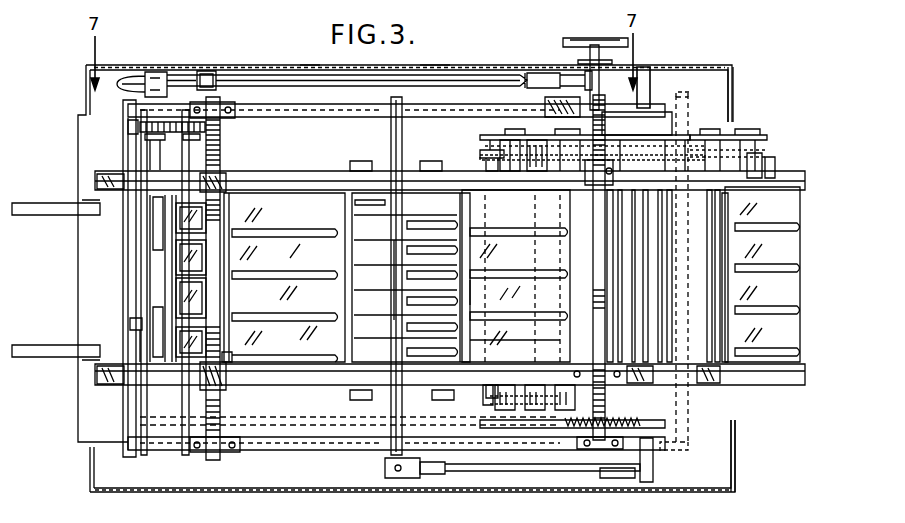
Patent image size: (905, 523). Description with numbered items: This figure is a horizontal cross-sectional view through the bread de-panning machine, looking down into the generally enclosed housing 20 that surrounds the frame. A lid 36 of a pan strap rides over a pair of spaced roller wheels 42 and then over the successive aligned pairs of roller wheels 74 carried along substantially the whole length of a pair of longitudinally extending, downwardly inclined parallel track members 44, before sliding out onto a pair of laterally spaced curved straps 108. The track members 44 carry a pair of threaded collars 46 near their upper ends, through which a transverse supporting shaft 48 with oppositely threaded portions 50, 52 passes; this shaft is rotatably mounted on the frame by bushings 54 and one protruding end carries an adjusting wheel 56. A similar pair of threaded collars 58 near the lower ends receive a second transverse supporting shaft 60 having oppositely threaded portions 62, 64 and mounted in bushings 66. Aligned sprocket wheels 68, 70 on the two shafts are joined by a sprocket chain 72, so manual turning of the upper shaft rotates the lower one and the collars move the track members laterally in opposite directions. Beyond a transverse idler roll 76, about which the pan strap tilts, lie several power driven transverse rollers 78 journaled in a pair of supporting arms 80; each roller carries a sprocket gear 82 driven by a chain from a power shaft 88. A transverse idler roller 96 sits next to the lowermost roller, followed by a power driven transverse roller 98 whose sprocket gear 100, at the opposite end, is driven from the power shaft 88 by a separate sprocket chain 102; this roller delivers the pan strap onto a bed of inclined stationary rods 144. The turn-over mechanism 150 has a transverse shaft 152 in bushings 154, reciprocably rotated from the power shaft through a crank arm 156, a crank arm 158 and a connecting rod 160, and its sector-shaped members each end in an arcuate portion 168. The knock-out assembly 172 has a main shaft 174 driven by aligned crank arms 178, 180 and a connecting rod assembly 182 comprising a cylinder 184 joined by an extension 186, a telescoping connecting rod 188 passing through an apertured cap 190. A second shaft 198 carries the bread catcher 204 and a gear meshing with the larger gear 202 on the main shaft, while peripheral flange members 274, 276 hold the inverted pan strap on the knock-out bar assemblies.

The housing 20 is at (281, 65).
The lid 36 is at (312, 258).
The roller wheels 42 is at (730, 340).
The track members 44 is at (322, 171).
The threaded collars 46 is at (486, 171).
The transverse supporting shaft 48 is at (608, 123).
The threaded portion 50 is at (560, 215).
The threaded portion 52 is at (545, 330).
The bushings 54 is at (632, 94).
The adjusting wheel 56 is at (597, 38).
The threaded collars 58 is at (228, 168).
The transverse supporting shaft 60 is at (222, 134).
The threaded portion 62 is at (225, 208).
The threaded portion 64 is at (228, 342).
The bushings 66 is at (228, 102).
The sprocket wheel 68 is at (620, 426).
The sprocket wheel 70 is at (184, 422).
The sprocket chain 72 is at (352, 418).
The roller wheels 74 is at (335, 171).
The transverse idler roll 76 is at (762, 168).
The transverse rollers 78 is at (668, 208).
The supporting arms 80 is at (716, 130).
The sprocket gear 82 is at (740, 134).
The power shaft 88 is at (548, 112).
The transverse idler roller 96 is at (540, 412).
The power driven transverse roller 98 is at (522, 150).
The sprocket gear 100 is at (518, 410).
The sprocket chain 102 is at (570, 445).
The curved straps 108 is at (32, 358).
The stationary rods 144 is at (430, 324).
The turn-over mechanism 150 is at (413, 268).
The transverse horizontal shaft 152 is at (390, 124).
The bushings 154 is at (412, 105).
The crank arm 156 is at (598, 468).
The crank arm 158 is at (425, 478).
The connecting rod 160 is at (458, 476).
The arcuate portion 168 is at (412, 214).
The de-panning or knock-out assembly 172 is at (165, 263).
The transverse horizontal shaft 174 is at (158, 408).
The crank arm 178 is at (135, 75).
The crank arm 180 is at (592, 60).
The connecting rod assembly 182 is at (428, 74).
The cylinder 184 is at (298, 74).
The extension 186 is at (530, 74).
The connecting rod 188 is at (185, 77).
The apertured cap 190 is at (210, 71).
The second horizontal transverse rotatable shaft 198 is at (198, 142).
The gear 202 is at (130, 125).
The bread catcher 204 is at (185, 290).
The peripheral flange member 274 is at (160, 220).
The peripheral flange member 276 is at (158, 310).